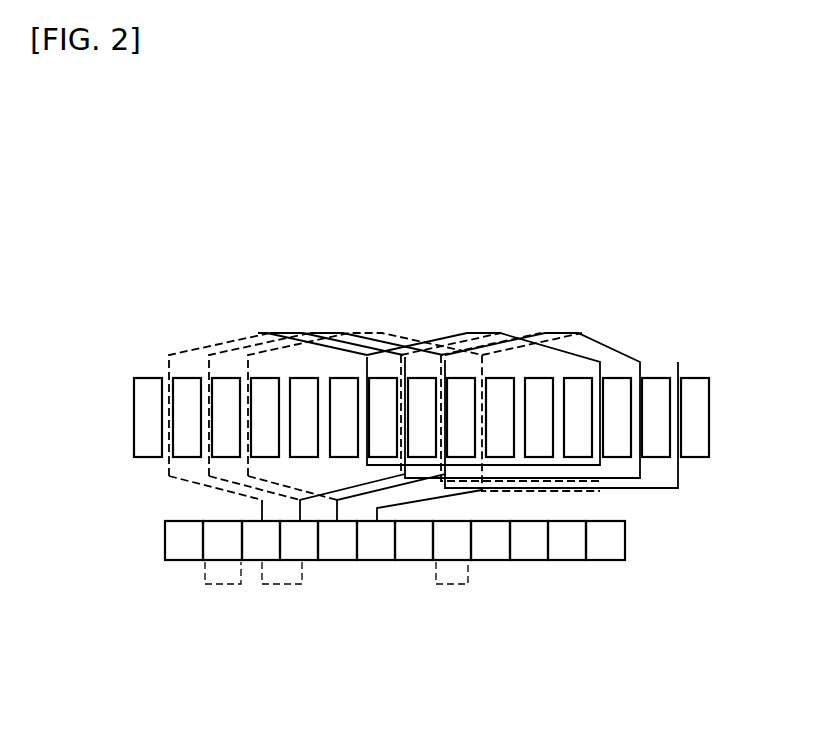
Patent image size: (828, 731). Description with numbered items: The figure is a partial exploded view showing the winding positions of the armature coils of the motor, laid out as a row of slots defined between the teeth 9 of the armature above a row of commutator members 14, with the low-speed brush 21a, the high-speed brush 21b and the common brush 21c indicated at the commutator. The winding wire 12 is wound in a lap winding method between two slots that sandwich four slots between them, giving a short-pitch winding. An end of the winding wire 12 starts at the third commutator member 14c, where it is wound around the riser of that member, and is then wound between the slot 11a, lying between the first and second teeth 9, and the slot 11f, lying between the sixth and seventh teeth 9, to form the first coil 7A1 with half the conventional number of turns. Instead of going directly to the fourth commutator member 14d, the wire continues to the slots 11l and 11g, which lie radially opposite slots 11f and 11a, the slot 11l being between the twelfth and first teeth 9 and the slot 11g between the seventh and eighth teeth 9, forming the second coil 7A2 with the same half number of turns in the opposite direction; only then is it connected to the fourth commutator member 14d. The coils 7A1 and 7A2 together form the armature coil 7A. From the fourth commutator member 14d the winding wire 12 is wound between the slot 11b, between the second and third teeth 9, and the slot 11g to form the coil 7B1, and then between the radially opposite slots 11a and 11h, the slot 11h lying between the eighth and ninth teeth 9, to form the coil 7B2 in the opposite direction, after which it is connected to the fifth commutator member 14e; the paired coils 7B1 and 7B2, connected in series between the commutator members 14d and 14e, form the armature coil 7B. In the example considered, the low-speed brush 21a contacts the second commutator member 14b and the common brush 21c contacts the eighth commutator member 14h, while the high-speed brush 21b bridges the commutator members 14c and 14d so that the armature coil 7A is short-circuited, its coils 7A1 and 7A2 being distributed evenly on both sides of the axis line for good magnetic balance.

The armature coil 7A is at (530, 137).
The first coil 7A1 is at (218, 343).
The second coil 7A2 is at (597, 352).
The armature coil 7B is at (528, 222).
The first coil 7B1 is at (250, 343).
The second coil 7B2 is at (578, 350).
The tooth 9 is at (152, 437).
The slot 11a is at (160, 377).
The slot 11b is at (200, 374).
The slot 11f is at (370, 358).
The slot 11g is at (408, 358).
The slot 11h is at (448, 360).
The slot 11l is at (603, 370).
The winding wire 12 is at (182, 482).
The commutator member 14 is at (181, 573).
The second commutator member 14b is at (229, 553).
The third commutator member 14c is at (272, 553).
The fourth commutator member 14d is at (308, 555).
The fifth commutator member 14e is at (339, 555).
The eighth commutator member 14h is at (455, 553).
The low-speed brush 21a is at (214, 585).
The high-speed brush 21b is at (292, 585).
The common brush 21c is at (448, 585).